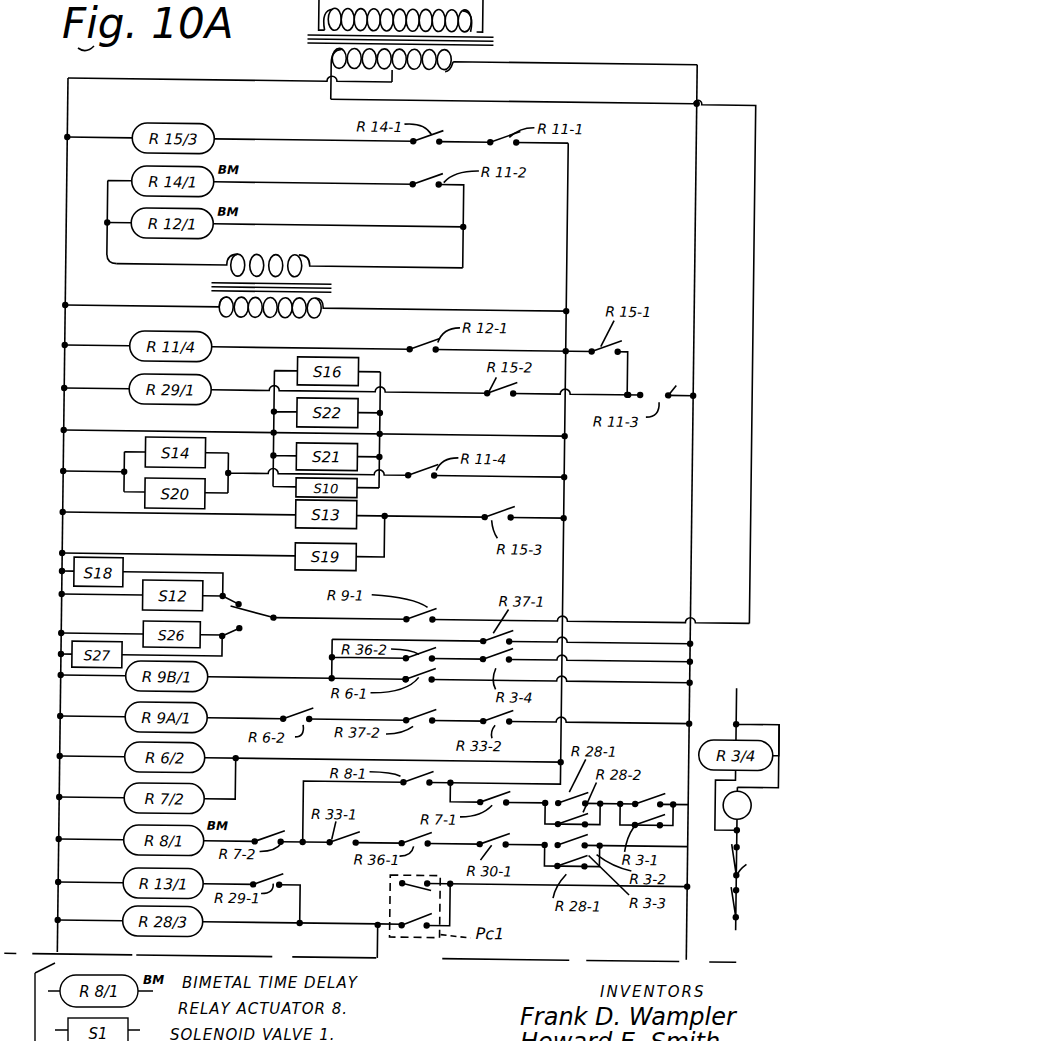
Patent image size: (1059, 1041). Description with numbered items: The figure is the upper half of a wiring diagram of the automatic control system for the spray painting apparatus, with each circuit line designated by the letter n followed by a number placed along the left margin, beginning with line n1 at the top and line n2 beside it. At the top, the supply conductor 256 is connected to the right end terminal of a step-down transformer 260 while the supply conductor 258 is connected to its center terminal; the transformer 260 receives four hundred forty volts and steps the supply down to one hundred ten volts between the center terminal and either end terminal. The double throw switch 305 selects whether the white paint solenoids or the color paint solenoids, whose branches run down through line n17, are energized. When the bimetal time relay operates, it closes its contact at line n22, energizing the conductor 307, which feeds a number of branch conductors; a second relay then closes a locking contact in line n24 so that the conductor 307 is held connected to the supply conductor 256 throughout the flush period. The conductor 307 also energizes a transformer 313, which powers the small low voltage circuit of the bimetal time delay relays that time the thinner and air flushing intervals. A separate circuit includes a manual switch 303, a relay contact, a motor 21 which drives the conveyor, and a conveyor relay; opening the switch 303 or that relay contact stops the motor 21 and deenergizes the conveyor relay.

The line n1 is at (80, 78).
The line n2 is at (688, 99).
The line n17 is at (700, 636).
The line n22 is at (521, 776).
The line n24 is at (457, 795).
The motor 21 is at (756, 810).
The supply conductor 256 is at (701, 82).
The supply conductor 258 is at (72, 108).
The step-down transformer 260 is at (488, 33).
The manual switch 303 is at (740, 905).
The double throw switch 305 is at (264, 620).
The conductor 307 is at (569, 570).
The transformer 313 is at (336, 274).